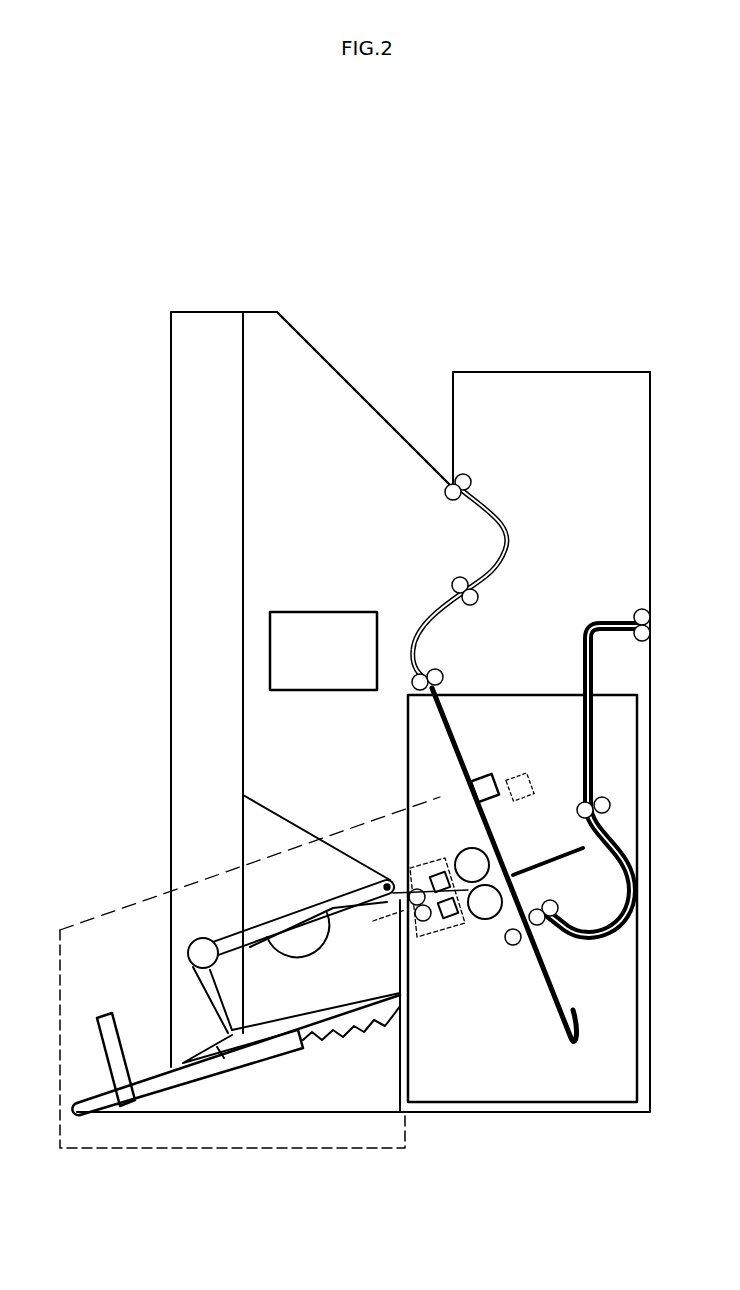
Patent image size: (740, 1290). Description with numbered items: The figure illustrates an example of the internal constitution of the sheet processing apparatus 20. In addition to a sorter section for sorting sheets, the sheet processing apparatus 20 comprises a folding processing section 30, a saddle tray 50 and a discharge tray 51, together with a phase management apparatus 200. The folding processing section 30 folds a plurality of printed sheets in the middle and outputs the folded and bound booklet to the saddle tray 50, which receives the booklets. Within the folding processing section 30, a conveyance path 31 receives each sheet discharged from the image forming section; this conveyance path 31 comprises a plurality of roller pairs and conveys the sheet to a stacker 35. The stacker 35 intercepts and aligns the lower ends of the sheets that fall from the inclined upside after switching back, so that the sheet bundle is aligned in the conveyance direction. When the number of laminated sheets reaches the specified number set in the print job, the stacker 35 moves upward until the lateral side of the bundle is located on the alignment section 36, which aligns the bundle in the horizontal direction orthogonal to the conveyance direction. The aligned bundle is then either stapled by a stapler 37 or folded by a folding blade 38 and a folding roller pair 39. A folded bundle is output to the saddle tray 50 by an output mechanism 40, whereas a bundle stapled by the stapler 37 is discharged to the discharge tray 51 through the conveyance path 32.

The sheet processing apparatus 20 is at (462, 296).
The phase management apparatus 200 is at (326, 609).
The discharge tray 51 is at (395, 407).
The conveyance path 32 is at (512, 532).
The folding processing section 30 is at (508, 688).
The conveyance path 31 is at (595, 622).
The stacker 35 is at (560, 1042).
The alignment section 36 is at (490, 775).
The stapler 37 is at (530, 775).
The folding blade 38 is at (525, 870).
The folding roller pair 39 is at (483, 925).
The output mechanism 40 is at (418, 860).
The saddle tray 50 is at (138, 903).